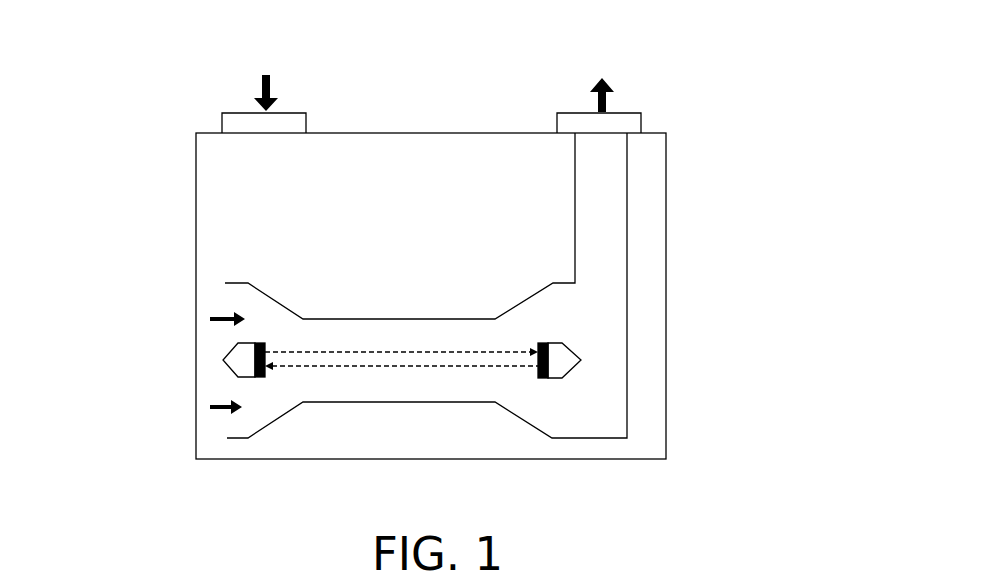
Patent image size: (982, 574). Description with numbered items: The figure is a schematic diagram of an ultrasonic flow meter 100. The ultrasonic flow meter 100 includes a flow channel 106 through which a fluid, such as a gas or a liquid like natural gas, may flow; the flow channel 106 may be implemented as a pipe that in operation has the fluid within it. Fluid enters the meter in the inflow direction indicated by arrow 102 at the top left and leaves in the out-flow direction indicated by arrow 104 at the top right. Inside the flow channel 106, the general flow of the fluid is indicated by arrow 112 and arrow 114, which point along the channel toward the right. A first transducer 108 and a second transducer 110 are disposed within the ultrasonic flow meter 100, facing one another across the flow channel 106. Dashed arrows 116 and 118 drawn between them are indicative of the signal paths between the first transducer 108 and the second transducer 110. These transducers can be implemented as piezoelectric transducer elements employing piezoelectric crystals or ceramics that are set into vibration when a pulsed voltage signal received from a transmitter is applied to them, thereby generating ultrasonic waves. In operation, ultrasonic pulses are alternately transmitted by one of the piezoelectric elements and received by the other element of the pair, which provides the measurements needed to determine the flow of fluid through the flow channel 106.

The ultrasonic flow meter 100 is at (112, 71).
The arrow 102 is at (275, 96).
The arrow 104 is at (607, 96).
The flow channel 106 is at (597, 326).
The first transducer 108 is at (232, 370).
The second transducer 110 is at (557, 380).
The arrow 112 is at (228, 318).
The arrow 114 is at (222, 410).
The dashed arrow 116 is at (378, 352).
The dashed arrow 118 is at (442, 366).